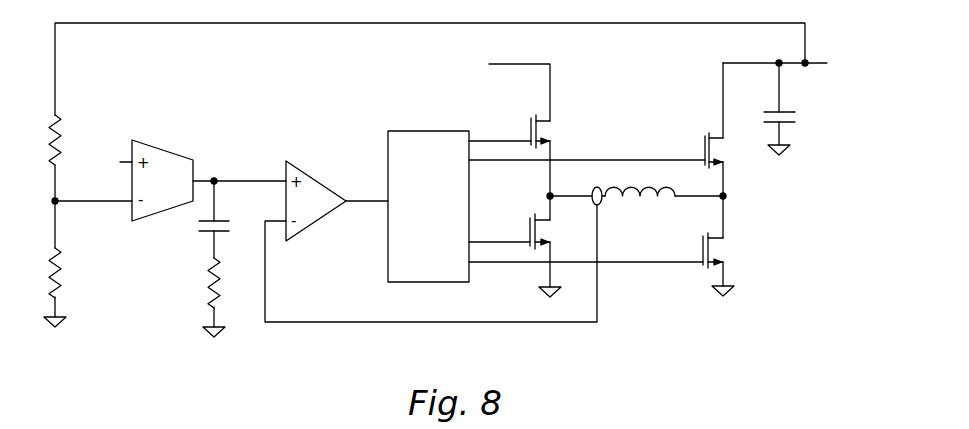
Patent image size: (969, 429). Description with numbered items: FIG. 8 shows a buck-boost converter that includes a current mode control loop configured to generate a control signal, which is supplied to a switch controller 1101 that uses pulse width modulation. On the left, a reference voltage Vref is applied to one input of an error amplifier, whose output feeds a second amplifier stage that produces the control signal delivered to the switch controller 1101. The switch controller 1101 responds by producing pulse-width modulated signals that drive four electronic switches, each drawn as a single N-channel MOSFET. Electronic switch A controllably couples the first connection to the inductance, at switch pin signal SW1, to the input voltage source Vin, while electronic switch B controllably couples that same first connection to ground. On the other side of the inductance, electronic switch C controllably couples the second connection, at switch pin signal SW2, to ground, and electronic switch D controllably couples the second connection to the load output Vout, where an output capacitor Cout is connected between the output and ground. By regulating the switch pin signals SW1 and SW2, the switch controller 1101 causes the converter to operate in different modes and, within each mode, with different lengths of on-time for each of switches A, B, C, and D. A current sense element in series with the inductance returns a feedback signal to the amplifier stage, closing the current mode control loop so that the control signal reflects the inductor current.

The switch controller 1101 is at (428, 131).
The electronic switch A is at (550, 131).
The electronic switch B is at (549, 233).
The electronic switch C is at (722, 250).
The electronic switch D is at (724, 150).
The switch pin signal SW1 is at (569, 190).
The switch pin signal SW2 is at (700, 190).
The input voltage terminal Vin is at (504, 87).
The output voltage terminal Vout is at (793, 65).
The output capacitor Cout is at (798, 109).
The reference voltage input Vref is at (110, 163).